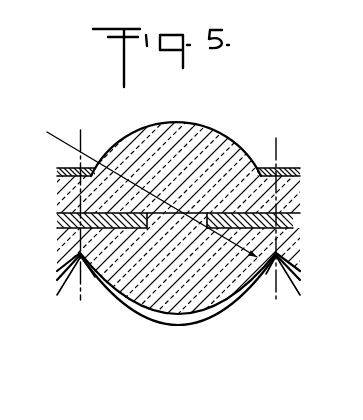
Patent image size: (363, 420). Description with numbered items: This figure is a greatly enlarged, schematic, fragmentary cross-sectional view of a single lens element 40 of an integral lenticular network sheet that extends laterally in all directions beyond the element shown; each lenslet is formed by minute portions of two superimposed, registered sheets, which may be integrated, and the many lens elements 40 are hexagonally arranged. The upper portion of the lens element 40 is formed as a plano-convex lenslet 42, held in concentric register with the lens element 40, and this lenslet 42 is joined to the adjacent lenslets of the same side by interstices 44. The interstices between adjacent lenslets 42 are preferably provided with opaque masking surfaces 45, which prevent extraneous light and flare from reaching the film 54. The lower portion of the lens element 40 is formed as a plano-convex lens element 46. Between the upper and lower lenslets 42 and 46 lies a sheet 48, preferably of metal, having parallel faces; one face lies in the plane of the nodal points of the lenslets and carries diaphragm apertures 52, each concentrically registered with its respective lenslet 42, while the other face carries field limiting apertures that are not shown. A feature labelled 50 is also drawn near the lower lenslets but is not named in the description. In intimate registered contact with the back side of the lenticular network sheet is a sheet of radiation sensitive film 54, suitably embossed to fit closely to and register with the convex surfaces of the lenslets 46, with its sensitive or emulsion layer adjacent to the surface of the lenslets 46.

The lens element 40 is at (178, 285).
The plano-convex lenslet 42 is at (200, 140).
The interstices 44 is at (296, 185).
The opaque masking surfaces 45 is at (290, 165).
The plano-convex lens element 46 is at (173, 293).
The sheet 48 is at (296, 218).
The hinge bump 50 is at (293, 228).
The diaphragm apertures 52 is at (171, 215).
The radiation sensitive film 54 is at (223, 307).